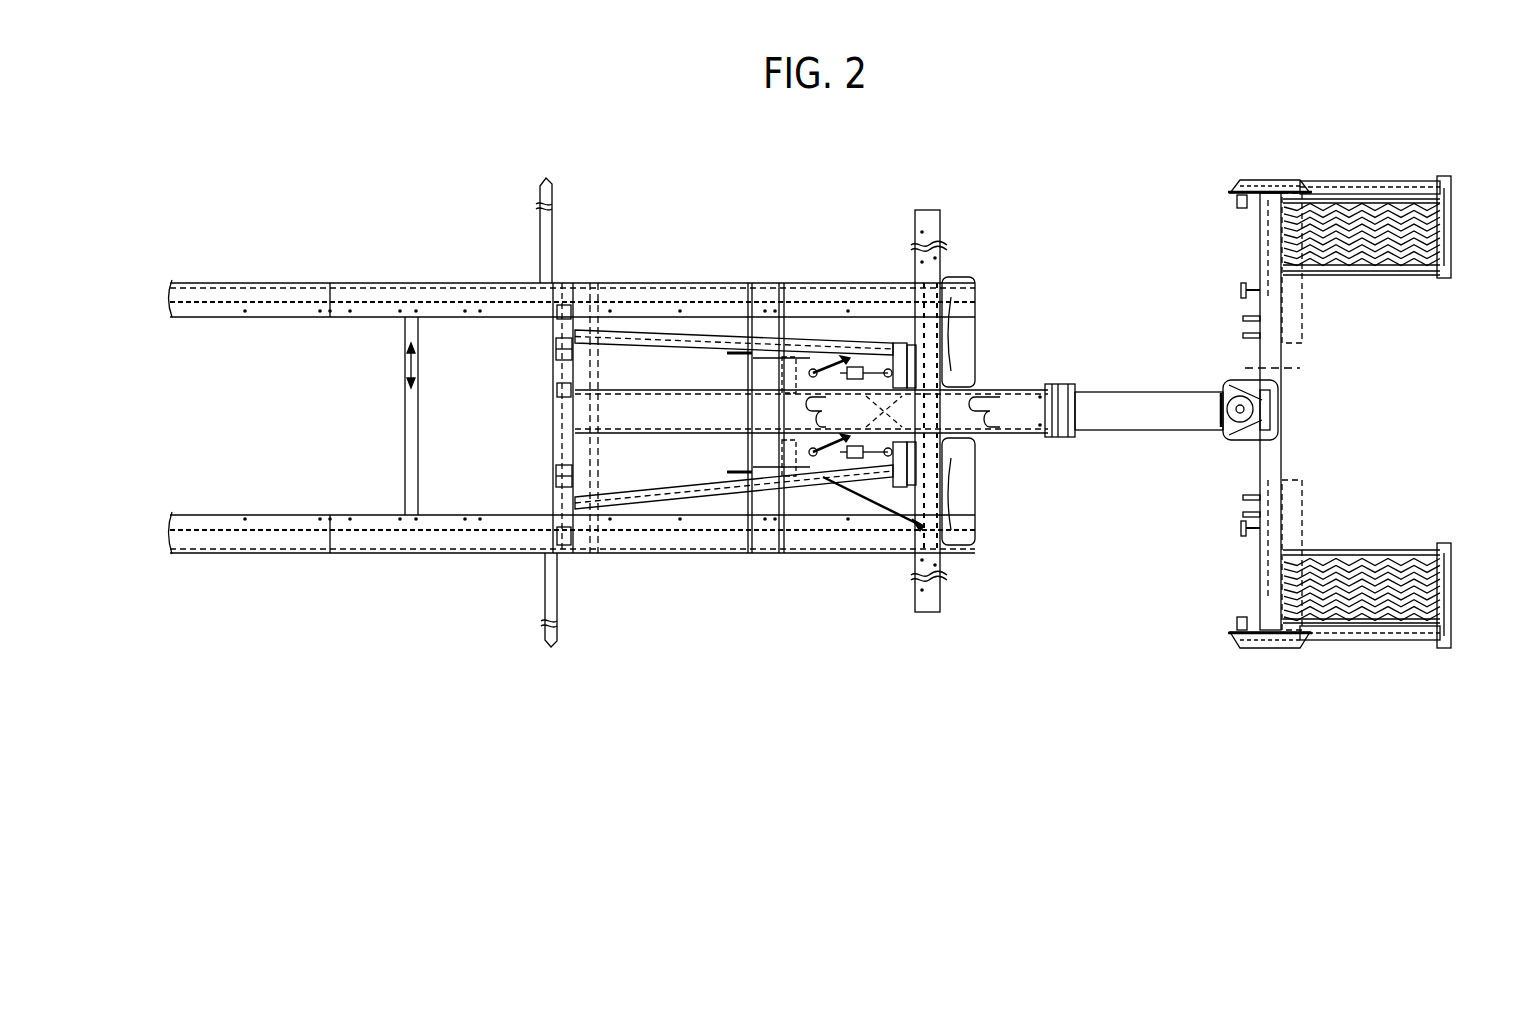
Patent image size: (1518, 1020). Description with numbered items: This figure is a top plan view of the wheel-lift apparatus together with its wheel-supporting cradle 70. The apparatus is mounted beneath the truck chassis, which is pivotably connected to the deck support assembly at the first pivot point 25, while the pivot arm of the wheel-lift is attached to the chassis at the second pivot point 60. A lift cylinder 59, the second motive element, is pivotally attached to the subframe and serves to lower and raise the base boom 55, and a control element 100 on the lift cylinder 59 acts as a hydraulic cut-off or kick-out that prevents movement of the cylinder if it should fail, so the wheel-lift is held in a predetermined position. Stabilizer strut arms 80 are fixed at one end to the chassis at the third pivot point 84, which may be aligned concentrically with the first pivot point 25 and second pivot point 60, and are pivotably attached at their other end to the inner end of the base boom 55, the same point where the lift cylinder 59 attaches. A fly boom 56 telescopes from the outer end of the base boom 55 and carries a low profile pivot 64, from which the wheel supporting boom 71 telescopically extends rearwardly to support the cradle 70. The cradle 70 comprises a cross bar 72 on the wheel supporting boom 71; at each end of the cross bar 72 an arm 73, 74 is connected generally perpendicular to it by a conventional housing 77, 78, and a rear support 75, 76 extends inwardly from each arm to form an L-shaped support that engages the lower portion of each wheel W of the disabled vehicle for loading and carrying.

The first pivot point 25 is at (560, 283).
The stabilizer strut arms 80 is at (686, 330).
The lift cylinder 59 is at (840, 360).
The third pivot point 84 is at (558, 350).
The second pivot point 60 is at (570, 390).
The control element 100 is at (858, 445).
The base boom 55 is at (680, 433).
The fly boom 56 is at (1150, 430).
The wheel supporting boom 71 is at (1225, 432).
The low profile pivot 64 is at (1242, 392).
The wheel supporting cradle 70 is at (1168, 258).
The cross bar 72 is at (1283, 463).
The arm 73 is at (1380, 182).
The arm 74 is at (1360, 645).
The rear support 75 is at (1452, 633).
The rear support 76 is at (1452, 263).
The housing 77 is at (1270, 180).
The housing 78 is at (1268, 648).
The wheel W is at (1365, 275).